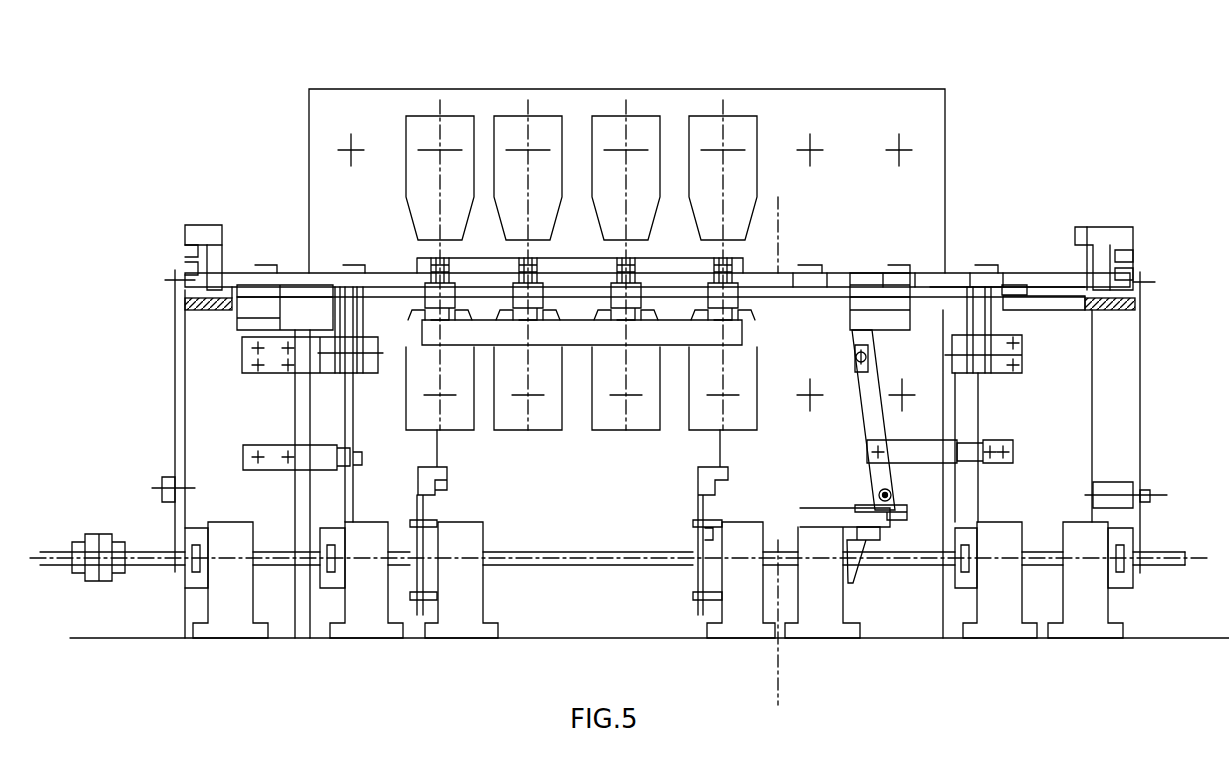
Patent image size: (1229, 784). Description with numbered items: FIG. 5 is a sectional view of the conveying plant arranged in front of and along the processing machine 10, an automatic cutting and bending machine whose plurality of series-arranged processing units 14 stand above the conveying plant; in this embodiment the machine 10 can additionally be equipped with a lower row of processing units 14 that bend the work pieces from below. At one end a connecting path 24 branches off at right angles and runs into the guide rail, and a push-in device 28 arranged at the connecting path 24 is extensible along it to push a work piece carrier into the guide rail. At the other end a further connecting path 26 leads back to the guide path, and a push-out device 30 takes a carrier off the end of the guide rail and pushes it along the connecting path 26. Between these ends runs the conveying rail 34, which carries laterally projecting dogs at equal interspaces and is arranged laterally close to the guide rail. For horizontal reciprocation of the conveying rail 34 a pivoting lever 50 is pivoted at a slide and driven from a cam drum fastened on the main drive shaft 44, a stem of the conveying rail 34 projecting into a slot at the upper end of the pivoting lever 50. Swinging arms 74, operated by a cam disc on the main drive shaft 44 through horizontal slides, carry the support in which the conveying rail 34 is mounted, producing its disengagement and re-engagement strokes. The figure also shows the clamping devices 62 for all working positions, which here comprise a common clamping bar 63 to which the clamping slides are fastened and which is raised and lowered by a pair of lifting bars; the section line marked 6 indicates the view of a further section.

The section line VI-VI 6 is at (728, 212).
The processing machine 10 is at (613, 100).
The processing units 14 is at (508, 122).
The connecting path 24 is at (207, 314).
The further connecting path 26 is at (1118, 312).
The push-in device 28 is at (181, 245).
The push-out device 30 is at (1142, 257).
The conveying rail 34 is at (1017, 290).
The main drive shaft 44 is at (568, 565).
The pivoting lever 50 is at (877, 411).
The clamping devices 62 is at (422, 294).
The common clamping bar 63 is at (732, 327).
The swinging arms 74 is at (352, 441).